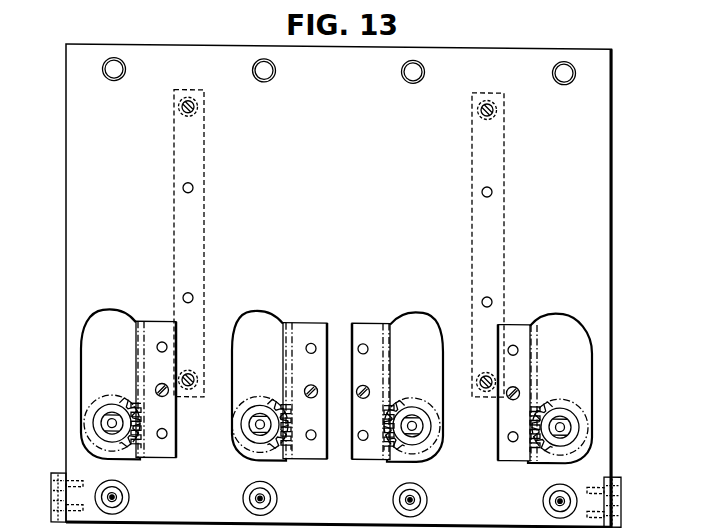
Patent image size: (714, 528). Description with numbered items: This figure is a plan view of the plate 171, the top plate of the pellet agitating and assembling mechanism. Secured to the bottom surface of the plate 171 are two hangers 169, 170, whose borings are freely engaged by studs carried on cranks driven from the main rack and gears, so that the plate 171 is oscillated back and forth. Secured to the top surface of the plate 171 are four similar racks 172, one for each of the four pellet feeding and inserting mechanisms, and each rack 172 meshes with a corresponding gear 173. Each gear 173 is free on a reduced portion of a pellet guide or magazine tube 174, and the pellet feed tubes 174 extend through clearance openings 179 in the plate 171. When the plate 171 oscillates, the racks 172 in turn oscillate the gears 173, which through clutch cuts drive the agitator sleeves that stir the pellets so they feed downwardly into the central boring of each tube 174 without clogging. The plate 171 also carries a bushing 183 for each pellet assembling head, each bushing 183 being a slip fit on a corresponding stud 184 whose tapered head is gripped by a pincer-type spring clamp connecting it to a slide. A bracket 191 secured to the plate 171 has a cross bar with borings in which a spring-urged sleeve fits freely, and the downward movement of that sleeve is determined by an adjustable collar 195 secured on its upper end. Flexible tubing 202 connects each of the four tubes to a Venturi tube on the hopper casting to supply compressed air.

The hanger 169 is at (472, 149).
The hanger 170 is at (205, 150).
The plate 171 is at (67, 168).
The rack 172 is at (168, 416).
The gear 173 is at (142, 448).
The pellet guide or magazine tube 174 is at (116, 416).
The clearance opening 179 is at (103, 317).
The bushing 183 is at (106, 77).
The stud 184 is at (258, 68).
The bracket 191 is at (50, 497).
The adjustable collar 195 is at (259, 498).
The flexible tubing 202 is at (257, 495).